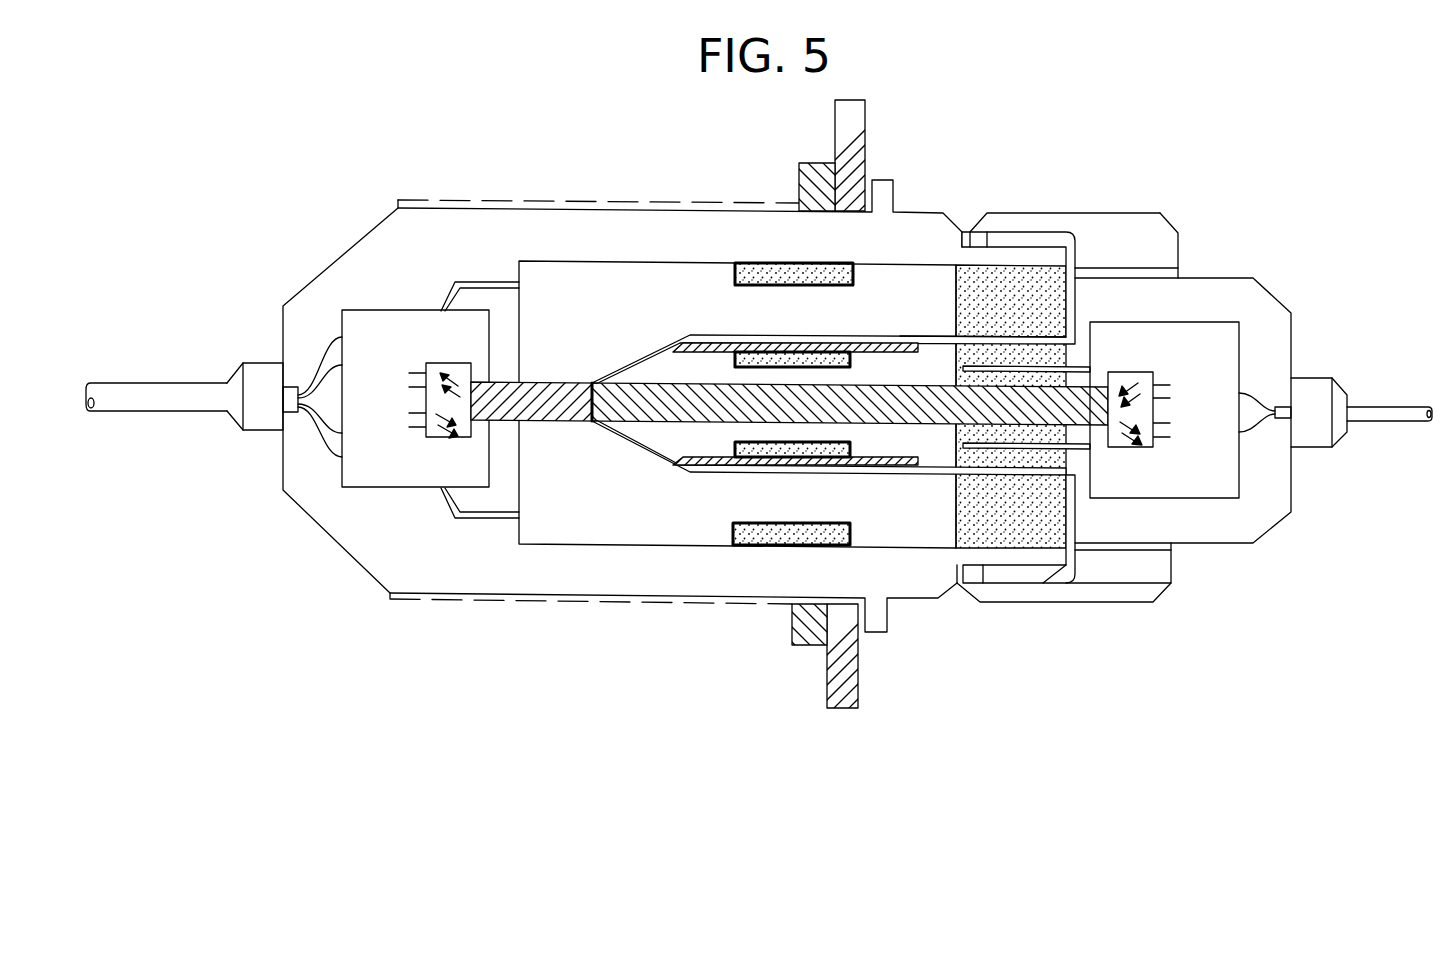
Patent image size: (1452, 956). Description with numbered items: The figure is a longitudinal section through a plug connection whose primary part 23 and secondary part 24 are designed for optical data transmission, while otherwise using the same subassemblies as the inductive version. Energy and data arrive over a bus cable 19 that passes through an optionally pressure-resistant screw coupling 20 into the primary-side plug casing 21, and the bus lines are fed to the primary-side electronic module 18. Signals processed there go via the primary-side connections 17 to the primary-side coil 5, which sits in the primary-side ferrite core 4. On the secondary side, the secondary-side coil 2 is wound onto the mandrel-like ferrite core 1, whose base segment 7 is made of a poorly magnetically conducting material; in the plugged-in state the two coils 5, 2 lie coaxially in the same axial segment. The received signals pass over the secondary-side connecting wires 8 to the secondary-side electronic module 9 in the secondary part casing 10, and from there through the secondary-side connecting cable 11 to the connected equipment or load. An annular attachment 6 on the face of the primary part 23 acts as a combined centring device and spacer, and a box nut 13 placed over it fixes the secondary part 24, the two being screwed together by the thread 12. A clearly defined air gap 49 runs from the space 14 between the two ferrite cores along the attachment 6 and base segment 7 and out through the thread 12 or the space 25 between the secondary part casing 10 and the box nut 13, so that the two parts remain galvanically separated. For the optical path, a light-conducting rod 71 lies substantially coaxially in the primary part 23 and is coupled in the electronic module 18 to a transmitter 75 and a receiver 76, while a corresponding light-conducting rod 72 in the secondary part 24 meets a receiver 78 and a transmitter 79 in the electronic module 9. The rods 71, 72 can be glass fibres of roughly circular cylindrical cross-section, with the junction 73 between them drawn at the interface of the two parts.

The mandrel-like ferrite core 1 is at (670, 376).
The secondary-side coil 2 is at (856, 359).
The primary-side ferrite core 4 is at (549, 332).
The primary-side coil 5 is at (770, 275).
The annular attachment 6 is at (1030, 280).
The base segment 7 is at (988, 458).
The secondary-side connecting wires 8 is at (1082, 362).
The secondary-side electronic module 9 is at (1167, 473).
The secondary part casing 10 is at (1277, 482).
The secondary-side connecting cable 11 is at (1389, 422).
The thread 12 is at (1000, 231).
The box nut 13 is at (1135, 225).
The space 14 is at (668, 466).
The primary-side connections 17 is at (481, 281).
The primary-side electronic module 18 is at (386, 352).
The bus cable 19 is at (131, 408).
The screw coupling 20 is at (262, 432).
The primary-side plug casing 21 is at (622, 406).
The primary part 23 is at (620, 196).
The secondary part 24 is at (1284, 292).
The space 25 is at (1153, 552).
The air gap 49 is at (940, 341).
The light-conducting rod 71 is at (540, 421).
The light-conducting rod 72 is at (628, 400).
The joint 73 is at (594, 425).
The transmitter 75 is at (447, 438).
The receiver 76 is at (452, 362).
The receiver 78 is at (1122, 446).
The transmitter 79 is at (1140, 378).